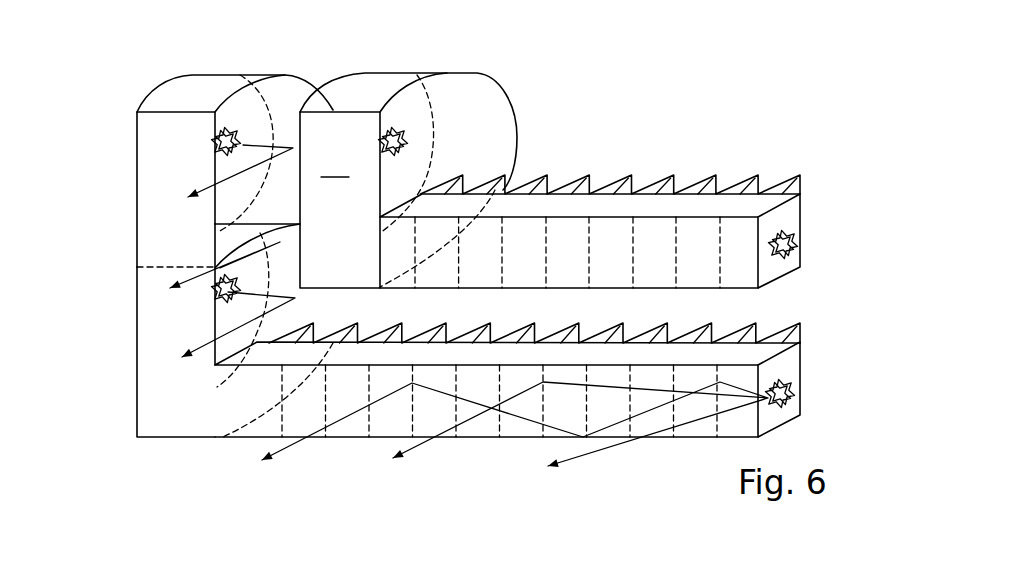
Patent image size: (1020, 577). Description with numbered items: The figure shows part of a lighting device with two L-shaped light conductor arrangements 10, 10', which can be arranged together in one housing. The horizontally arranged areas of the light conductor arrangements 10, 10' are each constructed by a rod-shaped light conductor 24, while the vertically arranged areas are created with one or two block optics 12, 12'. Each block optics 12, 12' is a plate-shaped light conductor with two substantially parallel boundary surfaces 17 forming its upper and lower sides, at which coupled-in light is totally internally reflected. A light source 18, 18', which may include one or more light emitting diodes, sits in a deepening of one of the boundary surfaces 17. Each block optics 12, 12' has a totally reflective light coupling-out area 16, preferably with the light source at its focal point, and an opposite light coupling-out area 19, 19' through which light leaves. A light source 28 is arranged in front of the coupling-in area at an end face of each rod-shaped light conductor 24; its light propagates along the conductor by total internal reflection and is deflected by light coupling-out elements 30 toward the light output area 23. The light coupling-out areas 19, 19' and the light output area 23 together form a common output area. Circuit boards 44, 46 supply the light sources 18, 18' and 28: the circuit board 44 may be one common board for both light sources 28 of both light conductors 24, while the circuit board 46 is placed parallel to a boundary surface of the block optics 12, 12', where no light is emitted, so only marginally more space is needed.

The light conductor arrangement 10 is at (597, 161).
The light conductor arrangement 10' is at (522, 321).
The block optics 12 is at (327, 180).
The block optics 12' is at (278, 330).
The light coupling-out area 16 is at (497, 138).
The boundary surfaces 17 is at (173, 100).
The light source 18 is at (316, 110).
The light source 18' is at (191, 299).
The light coupling-out area 19 is at (234, 200).
The light coupling-out area 19' is at (151, 330).
The light output area 23 is at (643, 265).
The rod-shaped light conductor 24 is at (520, 280).
The light source 28 is at (800, 240).
The light coupling-out elements 30 is at (640, 176).
The circuit board 44 is at (797, 210).
The circuit board 46 is at (200, 85).